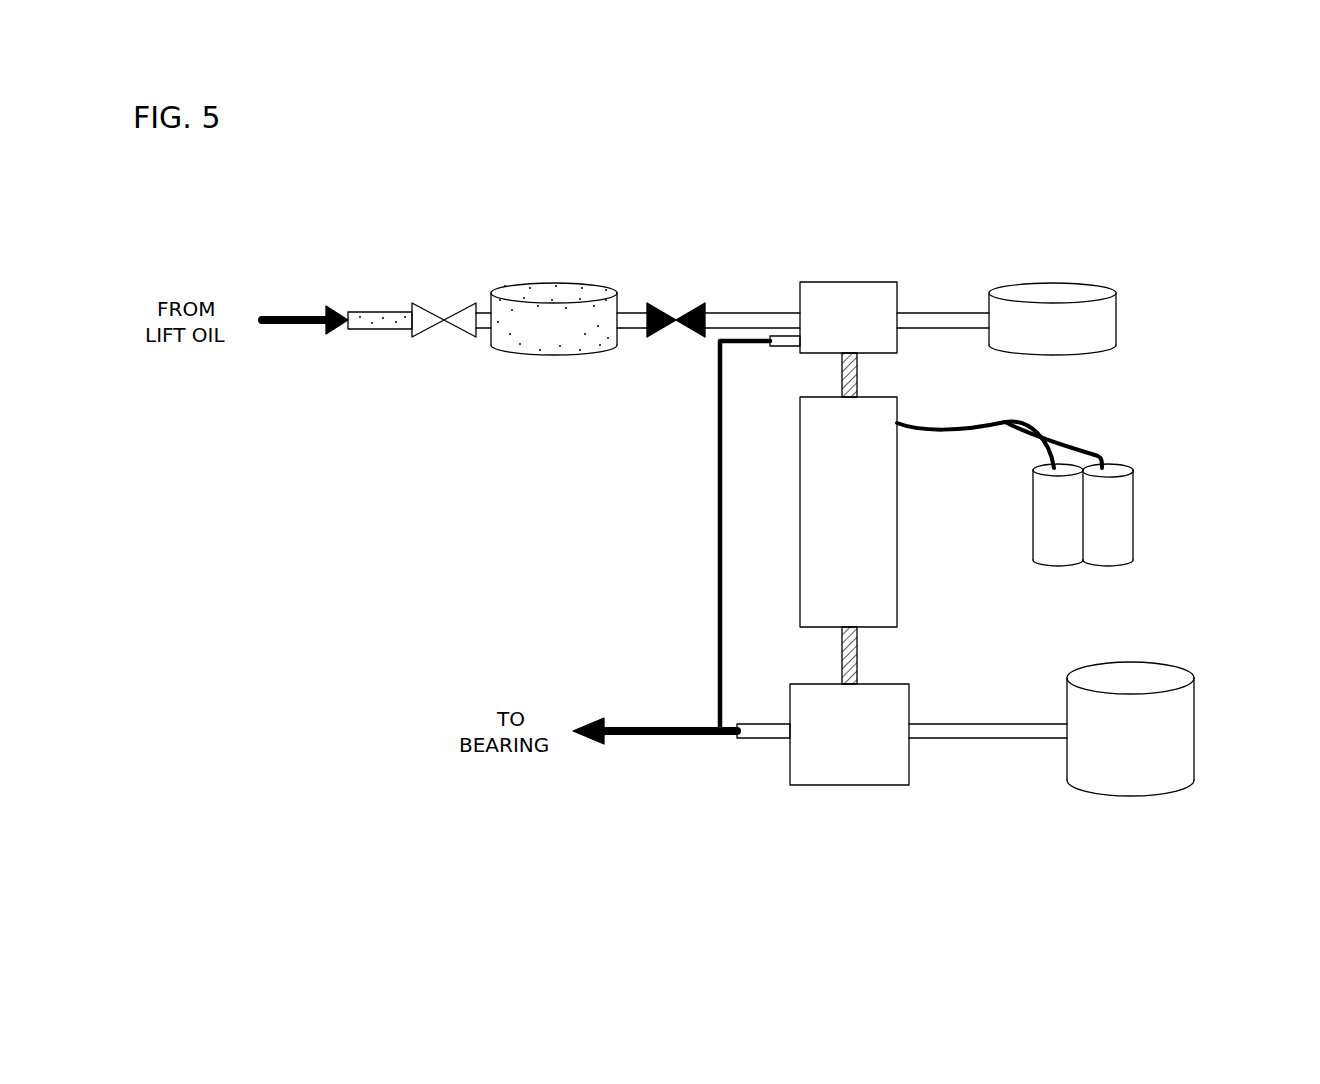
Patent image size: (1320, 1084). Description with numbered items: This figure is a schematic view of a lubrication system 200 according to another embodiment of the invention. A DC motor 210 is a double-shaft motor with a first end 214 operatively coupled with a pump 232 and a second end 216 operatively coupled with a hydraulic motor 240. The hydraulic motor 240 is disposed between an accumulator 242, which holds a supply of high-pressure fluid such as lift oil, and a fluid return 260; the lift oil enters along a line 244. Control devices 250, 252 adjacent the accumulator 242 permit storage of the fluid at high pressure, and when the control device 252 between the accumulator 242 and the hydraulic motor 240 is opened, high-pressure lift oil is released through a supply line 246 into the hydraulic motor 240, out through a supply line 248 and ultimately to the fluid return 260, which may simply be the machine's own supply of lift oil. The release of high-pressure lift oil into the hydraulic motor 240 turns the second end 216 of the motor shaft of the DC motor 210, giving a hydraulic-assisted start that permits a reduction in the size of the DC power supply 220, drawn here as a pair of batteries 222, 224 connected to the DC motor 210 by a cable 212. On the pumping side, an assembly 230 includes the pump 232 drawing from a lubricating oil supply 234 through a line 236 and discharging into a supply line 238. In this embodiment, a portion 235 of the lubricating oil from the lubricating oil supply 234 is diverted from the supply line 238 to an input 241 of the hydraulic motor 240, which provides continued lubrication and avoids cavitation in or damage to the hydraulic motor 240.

The lubrication system 200 is at (889, 212).
The DC motor 210 is at (848, 512).
The power cable 212 is at (1006, 428).
The first end 214 is at (841, 655).
The second end 216 is at (858, 389).
The DC power supply 220 is at (1146, 502).
The battery 222 is at (1058, 515).
The battery 224 is at (1108, 515).
The lubrication oil pump assembly 230 is at (992, 828).
The pump 232 is at (849, 734).
The lubricating oil supply 234 is at (1130, 729).
The portion of lubricating oil 235 is at (716, 536).
The inlet line 236 is at (997, 723).
The supply line 238 is at (770, 741).
The hydraulic motor 240 is at (848, 317).
The input 241 is at (782, 348).
The accumulator 242 is at (554, 319).
The lift oil inlet line 244 is at (381, 316).
The supply line 246 is at (751, 316).
The supply line 248 is at (946, 316).
The control device 250 is at (421, 336).
The control device 252 is at (653, 338).
The fluid return 260 is at (1052, 319).